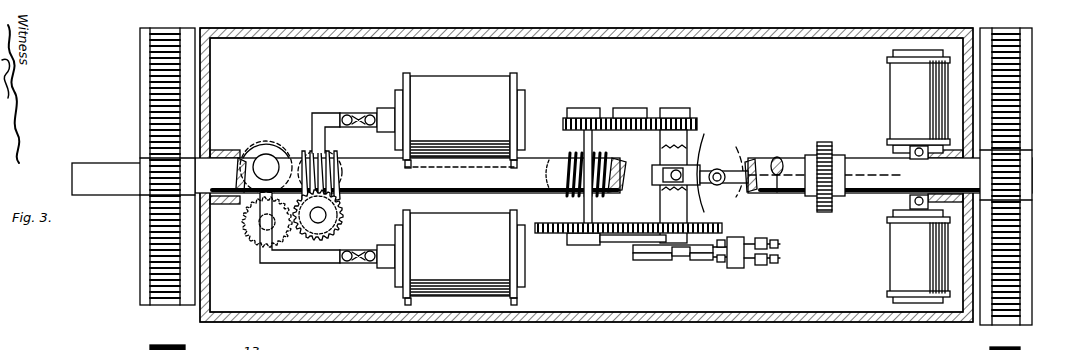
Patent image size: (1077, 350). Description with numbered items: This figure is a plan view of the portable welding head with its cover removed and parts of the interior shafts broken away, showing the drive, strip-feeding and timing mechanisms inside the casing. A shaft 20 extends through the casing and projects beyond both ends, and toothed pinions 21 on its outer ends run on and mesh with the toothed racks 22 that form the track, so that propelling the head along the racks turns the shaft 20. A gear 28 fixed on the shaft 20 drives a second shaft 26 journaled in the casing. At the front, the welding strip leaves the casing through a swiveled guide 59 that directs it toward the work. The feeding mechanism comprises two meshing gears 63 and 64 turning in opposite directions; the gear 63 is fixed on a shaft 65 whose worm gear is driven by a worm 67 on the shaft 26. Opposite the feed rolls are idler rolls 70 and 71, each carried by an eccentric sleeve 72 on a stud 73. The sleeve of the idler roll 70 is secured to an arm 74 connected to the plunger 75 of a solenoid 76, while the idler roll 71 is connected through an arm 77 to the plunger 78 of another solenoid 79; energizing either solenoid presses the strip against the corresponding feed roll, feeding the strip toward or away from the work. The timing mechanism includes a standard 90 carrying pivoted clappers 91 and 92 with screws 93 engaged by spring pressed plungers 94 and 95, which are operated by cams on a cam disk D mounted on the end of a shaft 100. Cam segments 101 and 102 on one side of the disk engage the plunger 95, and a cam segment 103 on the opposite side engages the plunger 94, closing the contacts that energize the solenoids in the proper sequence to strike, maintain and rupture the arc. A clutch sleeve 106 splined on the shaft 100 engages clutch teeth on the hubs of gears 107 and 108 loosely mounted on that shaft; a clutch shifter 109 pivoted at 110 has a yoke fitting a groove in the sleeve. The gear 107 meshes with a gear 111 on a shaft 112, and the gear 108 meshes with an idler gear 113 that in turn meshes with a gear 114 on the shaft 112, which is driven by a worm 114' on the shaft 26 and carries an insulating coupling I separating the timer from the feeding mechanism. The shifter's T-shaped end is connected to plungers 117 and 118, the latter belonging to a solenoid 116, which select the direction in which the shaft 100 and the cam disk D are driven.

The shaft 20 is at (214, 158).
The toothed pinions 21 is at (160, 155).
The toothed racks 22 is at (158, 55).
The shaft 26 is at (764, 165).
The gear 28 is at (828, 148).
The guide 59 is at (77, 167).
The gear 63 is at (341, 228).
The gear 64 is at (252, 242).
The shaft 65 is at (326, 213).
The worm 67 is at (305, 153).
The idler roll 70 is at (330, 152).
The idler roll 71 is at (268, 143).
The eccentric sleeve 72 is at (272, 155).
The stud 73 is at (258, 150).
The arm 74 is at (324, 118).
The plunger 75 is at (386, 108).
The solenoid 76 is at (452, 86).
The arm 77 is at (290, 263).
The plunger 78 is at (372, 268).
The solenoid 79 is at (452, 228).
The standard 90 is at (737, 269).
The clapper 91 is at (762, 238).
The clapper 92 is at (768, 263).
The screws 93 is at (779, 257).
The spring pressed plunger 94 is at (725, 241).
The spring pressed plunger 95 is at (723, 263).
The shaft 100 is at (660, 186).
The cam segment 101 is at (701, 260).
The cam segment 102 is at (650, 260).
The cam segment 103 is at (679, 257).
The clutch sleeve 106 is at (665, 153).
The gear 107 is at (740, 188).
The gear 108 is at (695, 120).
The clutch shifter 109 is at (748, 162).
The pivot 110 is at (718, 168).
The gear 111 is at (556, 234).
The shaft 112 is at (582, 204).
The idler gear 113 is at (623, 108).
The gear 114 is at (570, 99).
The worm 114' is at (552, 161).
The solenoid 116 is at (893, 92).
The plunger 117 is at (910, 150).
The plunger 118 is at (910, 203).
The cam disk D is at (632, 249).
The insulating coupling I is at (658, 211).